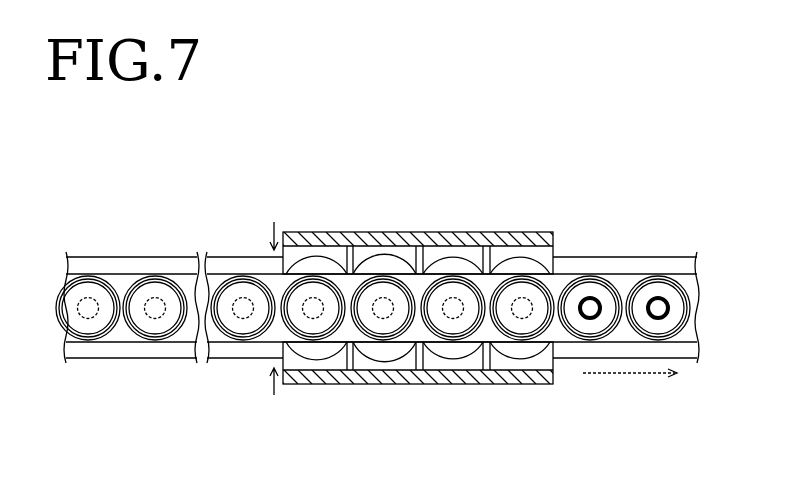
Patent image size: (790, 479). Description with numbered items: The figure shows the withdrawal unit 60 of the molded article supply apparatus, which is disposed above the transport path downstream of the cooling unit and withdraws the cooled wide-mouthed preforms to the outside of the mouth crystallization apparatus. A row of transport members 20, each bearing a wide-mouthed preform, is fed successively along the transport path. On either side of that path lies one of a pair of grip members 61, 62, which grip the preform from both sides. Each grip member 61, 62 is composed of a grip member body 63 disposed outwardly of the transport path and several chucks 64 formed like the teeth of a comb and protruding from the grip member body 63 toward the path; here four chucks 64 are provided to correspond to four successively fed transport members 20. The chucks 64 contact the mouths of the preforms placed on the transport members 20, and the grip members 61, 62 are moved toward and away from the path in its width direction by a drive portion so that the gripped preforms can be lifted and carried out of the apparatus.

The transport member 20 is at (373, 268).
The withdrawal unit 60 is at (466, 282).
The grip member 61 is at (569, 235).
The grip member 62 is at (553, 407).
The grip member body 63 is at (370, 242).
The chuck 64 is at (436, 255).